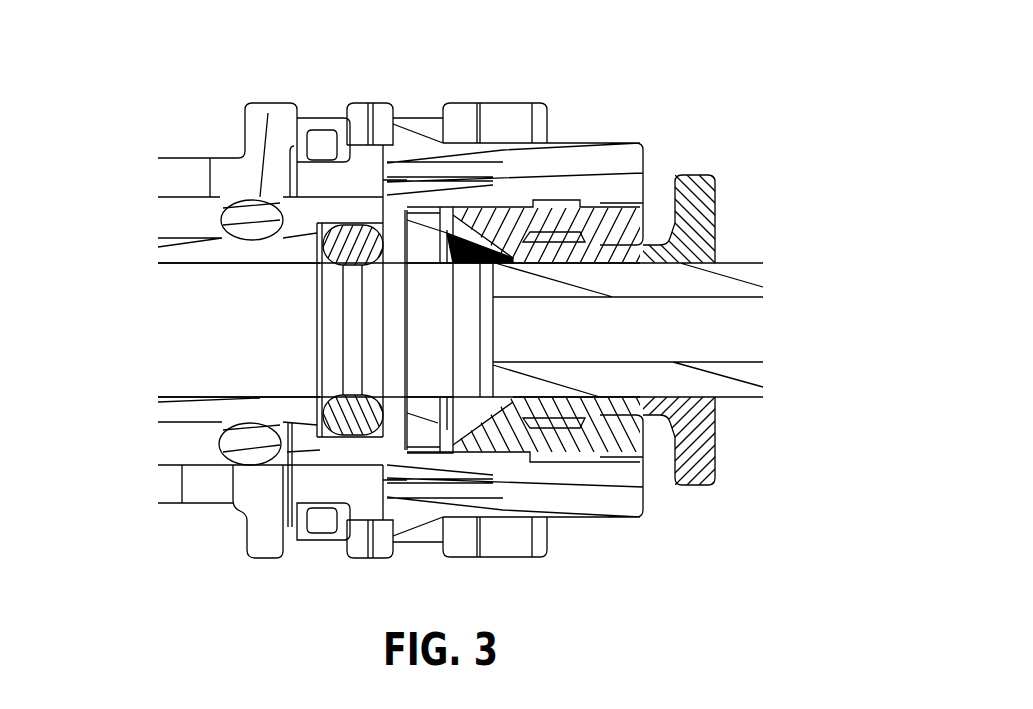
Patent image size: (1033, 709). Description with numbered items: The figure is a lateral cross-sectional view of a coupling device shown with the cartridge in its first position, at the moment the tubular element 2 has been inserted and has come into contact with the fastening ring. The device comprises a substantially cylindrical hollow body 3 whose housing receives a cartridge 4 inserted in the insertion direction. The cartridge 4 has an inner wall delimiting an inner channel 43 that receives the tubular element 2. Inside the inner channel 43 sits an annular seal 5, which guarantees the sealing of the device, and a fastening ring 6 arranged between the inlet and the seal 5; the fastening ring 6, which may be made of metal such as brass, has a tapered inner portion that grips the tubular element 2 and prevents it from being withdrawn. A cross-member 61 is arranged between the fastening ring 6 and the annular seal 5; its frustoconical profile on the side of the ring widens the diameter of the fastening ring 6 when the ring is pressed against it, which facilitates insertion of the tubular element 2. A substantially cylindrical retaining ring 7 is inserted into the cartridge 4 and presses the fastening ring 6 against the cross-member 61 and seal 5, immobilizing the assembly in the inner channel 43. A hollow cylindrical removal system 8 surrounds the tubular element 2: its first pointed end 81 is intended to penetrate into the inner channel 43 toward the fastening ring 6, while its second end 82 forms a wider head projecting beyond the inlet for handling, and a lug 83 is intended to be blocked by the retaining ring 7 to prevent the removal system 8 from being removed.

The tubular element 2 is at (723, 377).
The hollow body 3 is at (283, 562).
The cartridge 4 is at (617, 517).
The annular seal 5 is at (350, 243).
The fastening ring 6 is at (493, 263).
The retaining ring 7 is at (633, 440).
The removal system 8 is at (707, 172).
The inner channel 43 is at (227, 340).
The cross-member 61 is at (422, 245).
The first pointed end 81 is at (527, 257).
The second end 82 is at (700, 213).
The lug 83 is at (600, 232).